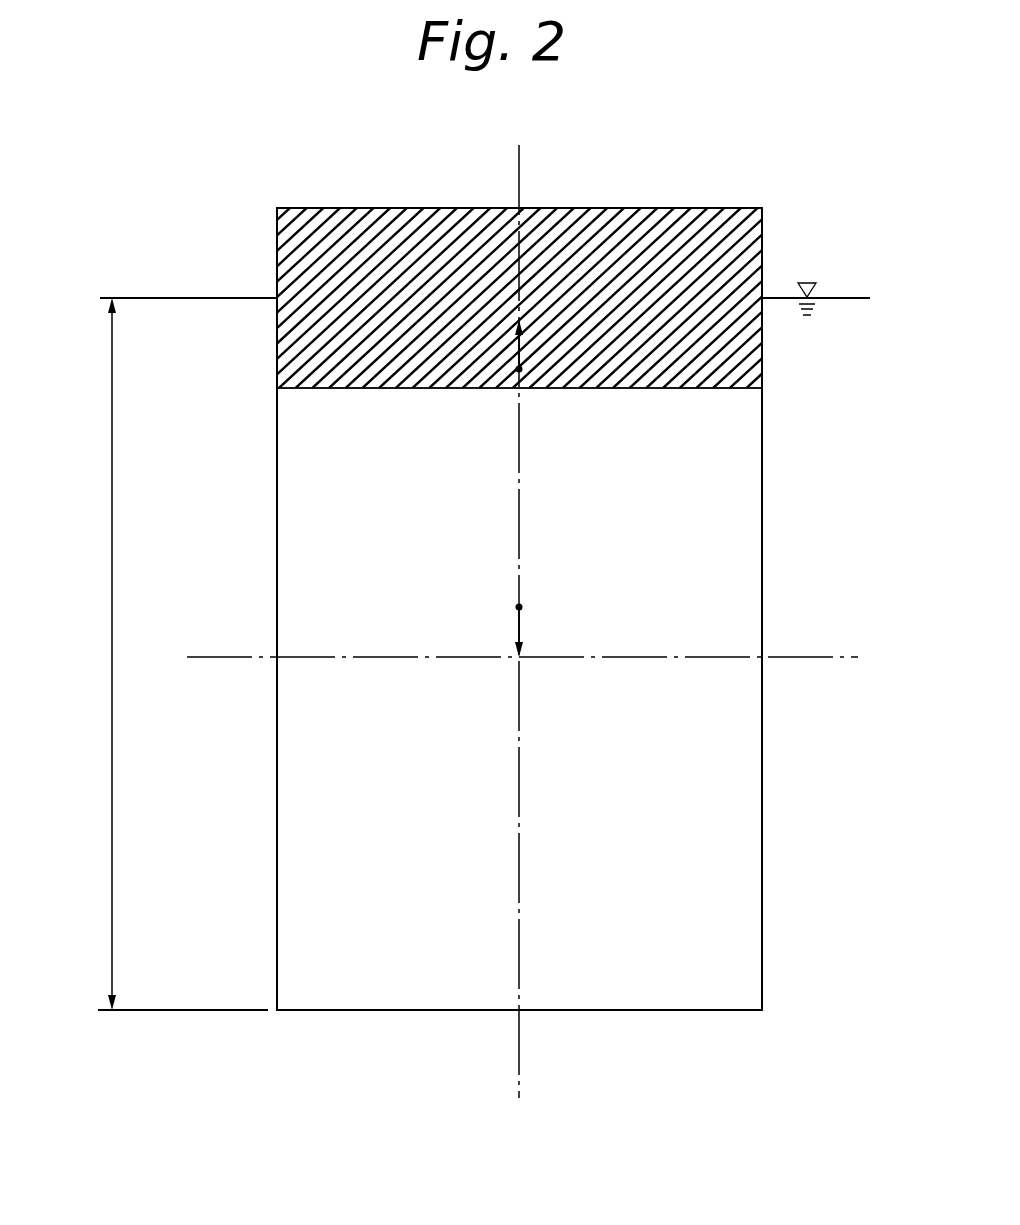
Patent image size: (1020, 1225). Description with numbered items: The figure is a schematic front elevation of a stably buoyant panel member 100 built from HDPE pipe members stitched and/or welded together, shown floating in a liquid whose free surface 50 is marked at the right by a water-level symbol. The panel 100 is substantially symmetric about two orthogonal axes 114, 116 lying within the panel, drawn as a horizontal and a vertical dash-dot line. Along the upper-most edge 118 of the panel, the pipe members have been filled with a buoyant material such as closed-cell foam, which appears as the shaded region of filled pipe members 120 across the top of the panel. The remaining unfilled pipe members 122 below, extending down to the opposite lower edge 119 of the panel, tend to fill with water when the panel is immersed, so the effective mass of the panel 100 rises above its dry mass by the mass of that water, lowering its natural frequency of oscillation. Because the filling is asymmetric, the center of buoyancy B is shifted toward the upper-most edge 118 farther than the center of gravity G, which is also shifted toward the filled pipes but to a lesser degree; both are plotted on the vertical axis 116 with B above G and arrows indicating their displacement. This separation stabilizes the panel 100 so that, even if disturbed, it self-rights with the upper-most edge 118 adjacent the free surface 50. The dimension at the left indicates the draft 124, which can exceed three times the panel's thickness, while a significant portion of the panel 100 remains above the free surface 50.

The panel member 100 is at (793, 238).
The free surface 50 is at (843, 298).
The orthogonal axis 114 is at (817, 657).
The orthogonal axis 116 is at (519, 533).
The upper-most edge 118 is at (635, 208).
The bottom surface 119 is at (693, 1010).
The filled pipe members 120 is at (378, 220).
The unfilled pipe members 122 is at (690, 797).
The draft 124 is at (110, 645).
The center of buoyancy B is at (519, 369).
The center of gravity G is at (519, 607).